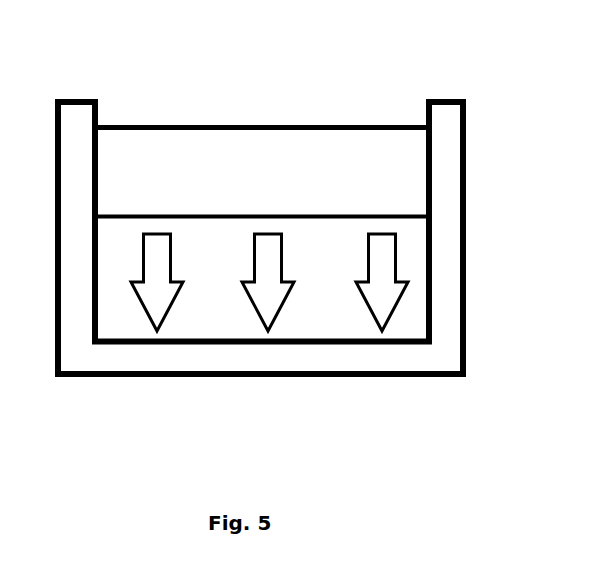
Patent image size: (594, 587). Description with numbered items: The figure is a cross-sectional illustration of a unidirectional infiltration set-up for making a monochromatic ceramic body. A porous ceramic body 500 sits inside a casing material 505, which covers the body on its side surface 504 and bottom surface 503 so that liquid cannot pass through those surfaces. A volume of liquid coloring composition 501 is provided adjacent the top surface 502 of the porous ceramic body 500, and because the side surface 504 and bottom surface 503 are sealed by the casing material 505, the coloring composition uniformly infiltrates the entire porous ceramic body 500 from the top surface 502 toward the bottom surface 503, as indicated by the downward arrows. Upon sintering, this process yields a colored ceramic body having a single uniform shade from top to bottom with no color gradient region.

The porous ceramic body 500 is at (410, 318).
The liquid coloring composition 501 is at (318, 150).
The top surface 502 is at (338, 216).
The bottom surface 503 is at (350, 345).
The side surface 504 is at (430, 248).
The casing material 505 is at (153, 367).